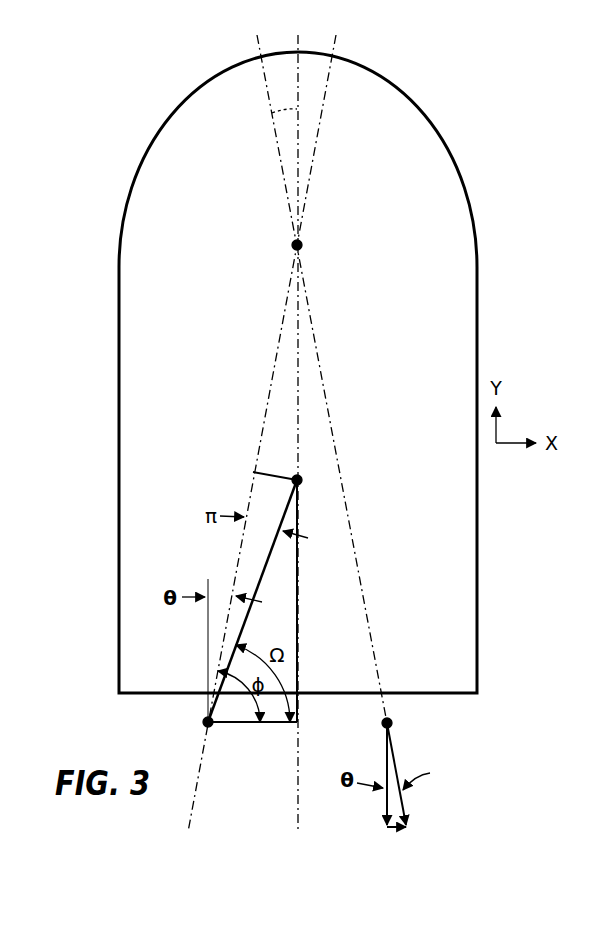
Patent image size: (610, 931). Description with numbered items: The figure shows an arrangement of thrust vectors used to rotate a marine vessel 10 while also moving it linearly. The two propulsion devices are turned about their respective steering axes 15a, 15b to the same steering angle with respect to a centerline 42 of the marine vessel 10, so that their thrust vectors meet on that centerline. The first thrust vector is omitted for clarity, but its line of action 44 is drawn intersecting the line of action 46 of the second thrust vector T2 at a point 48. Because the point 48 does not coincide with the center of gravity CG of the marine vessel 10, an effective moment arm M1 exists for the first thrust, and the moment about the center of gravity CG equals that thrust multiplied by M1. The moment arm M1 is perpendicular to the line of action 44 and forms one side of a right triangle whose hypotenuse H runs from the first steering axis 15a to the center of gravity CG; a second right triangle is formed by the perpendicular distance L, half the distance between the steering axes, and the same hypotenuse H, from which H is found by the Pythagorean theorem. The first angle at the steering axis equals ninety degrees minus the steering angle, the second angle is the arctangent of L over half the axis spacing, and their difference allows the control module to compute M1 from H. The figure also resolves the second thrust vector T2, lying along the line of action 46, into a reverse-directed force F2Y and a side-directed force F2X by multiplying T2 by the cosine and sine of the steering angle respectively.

The marine vessel 10 is at (449, 150).
The centerline 42 is at (272, 113).
The line of action 44 is at (331, 78).
The line of action 46 is at (265, 80).
The point 48 is at (303, 246).
The steering axis 15a is at (204, 721).
The steering axis 15b is at (391, 721).
The center of gravity CG is at (302, 480).
The moment arm M1 is at (275, 474).
The hypotenuse H is at (266, 558).
The perpendicular distance L is at (299, 590).
The second thrust vector T2 is at (395, 766).
The reverse-directed force F2Y is at (384, 807).
The side-directed force F2X is at (393, 831).